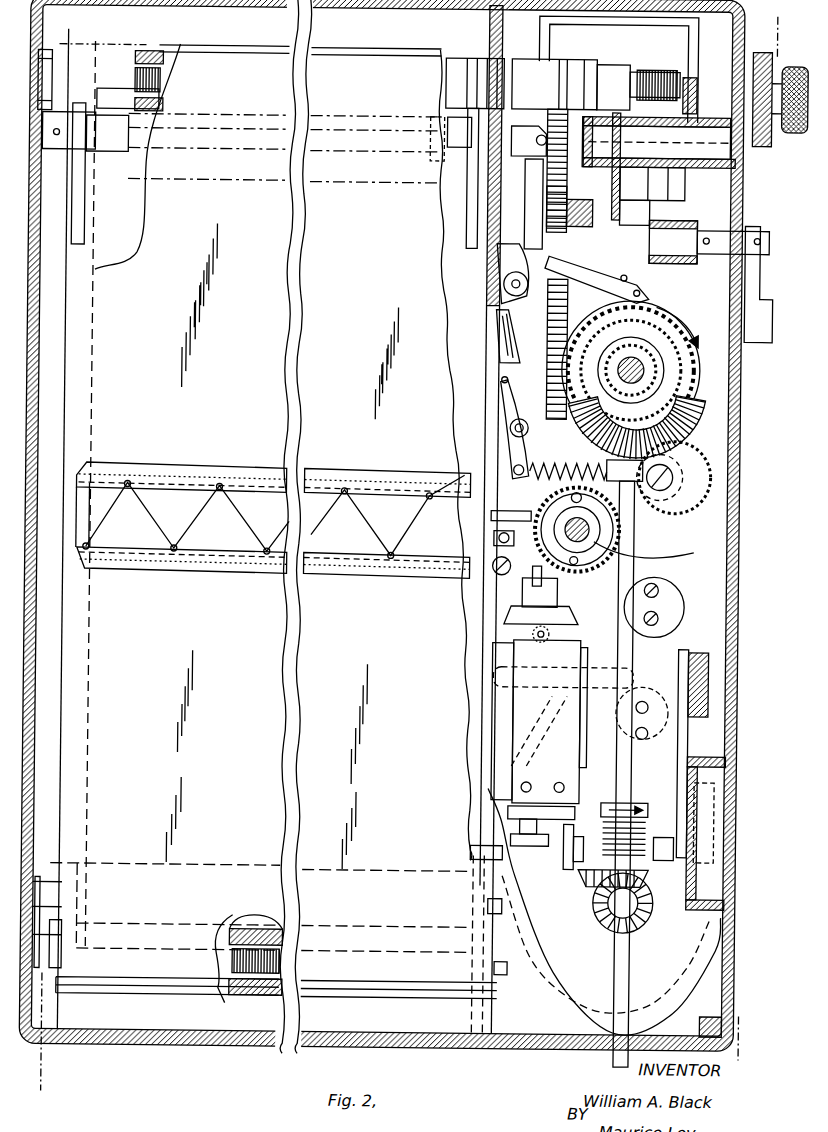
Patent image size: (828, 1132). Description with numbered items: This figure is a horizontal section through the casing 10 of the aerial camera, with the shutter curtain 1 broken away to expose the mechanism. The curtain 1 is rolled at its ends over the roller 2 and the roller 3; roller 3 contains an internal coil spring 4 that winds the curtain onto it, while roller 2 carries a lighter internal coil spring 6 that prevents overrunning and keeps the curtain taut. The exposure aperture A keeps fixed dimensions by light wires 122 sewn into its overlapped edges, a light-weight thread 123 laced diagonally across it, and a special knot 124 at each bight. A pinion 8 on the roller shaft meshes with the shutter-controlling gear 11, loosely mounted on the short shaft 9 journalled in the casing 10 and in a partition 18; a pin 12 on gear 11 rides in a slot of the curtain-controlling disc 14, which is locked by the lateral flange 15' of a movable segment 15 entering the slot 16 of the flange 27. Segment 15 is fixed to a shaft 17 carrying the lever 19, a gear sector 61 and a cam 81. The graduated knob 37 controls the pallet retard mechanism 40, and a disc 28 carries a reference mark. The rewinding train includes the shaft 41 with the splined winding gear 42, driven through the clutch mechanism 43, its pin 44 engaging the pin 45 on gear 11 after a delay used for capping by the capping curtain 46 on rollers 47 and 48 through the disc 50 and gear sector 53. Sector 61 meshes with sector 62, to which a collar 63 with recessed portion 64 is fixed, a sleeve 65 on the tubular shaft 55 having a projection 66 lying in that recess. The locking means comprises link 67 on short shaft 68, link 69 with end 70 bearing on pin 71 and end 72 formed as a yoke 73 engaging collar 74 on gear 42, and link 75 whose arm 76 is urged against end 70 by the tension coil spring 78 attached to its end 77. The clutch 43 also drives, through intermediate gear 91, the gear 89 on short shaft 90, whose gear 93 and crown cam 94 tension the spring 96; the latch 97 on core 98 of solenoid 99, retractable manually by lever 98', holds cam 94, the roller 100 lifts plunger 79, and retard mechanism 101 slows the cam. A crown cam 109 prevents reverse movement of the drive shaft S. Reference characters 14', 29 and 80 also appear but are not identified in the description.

The shutter curtain 1 is at (69, 321).
The roller 2 is at (153, 44).
The roller 3 is at (57, 978).
The internal coil spring 4 is at (782, 30).
The internal coil spring 6 is at (137, 70).
The pinion 8 is at (700, 20).
The short shaft 9 is at (665, 130).
The casing 10 is at (749, 388).
The shutter-controlling gear 11 is at (603, 58).
The pin 12 is at (622, 215).
The curtain-controlling disc 14 is at (715, 198).
The clutch member 14' is at (709, 213).
The movable segment 15 is at (714, 222).
The lateral flange 15' is at (712, 180).
The slot 16 is at (630, 168).
The shaft 17 is at (728, 240).
The partition 18 is at (499, 265).
The lever 19 is at (776, 300).
The flange 27 is at (636, 220).
The disc 28 is at (748, 181).
The bracket 29 is at (745, 164).
The knob 37 is at (759, 48).
The pallet retard mechanism 40 is at (656, 58).
The shaft 41 is at (337, 135).
The winding gear 42 is at (565, 55).
The clutch mechanism 43 is at (712, 415).
The pin 44 is at (568, 228).
The pin 45 is at (590, 228).
The capping curtain 46 is at (98, 249).
The roller 47 is at (98, 180).
The roller 48 is at (70, 868).
The disc 50 is at (80, 48).
The gear sector 53 is at (82, 237).
The tubular shaft 55 is at (360, 148).
The gear sector 61 is at (455, 208).
The gear sector 62 is at (445, 178).
The collar 63 is at (475, 83).
The recessed portion 64 is at (442, 134).
The sleeve 65 is at (443, 117).
The projection 66 is at (446, 130).
The link 67 is at (630, 272).
The short shaft 68 is at (507, 279).
The link 69 is at (478, 238).
The end 70 is at (500, 354).
The pin 71 is at (506, 374).
The end 72 is at (512, 184).
The yoke 73 is at (512, 53).
The collar 74 is at (538, 118).
The link 75 is at (515, 425).
The arm 76 is at (525, 398).
The end 77 is at (519, 462).
The tension coil spring 78 is at (575, 456).
The plunger 79 is at (500, 533).
The arm 80 is at (500, 510).
The cam 81 is at (540, 202).
The gear 89 is at (628, 556).
The short shaft 90 is at (620, 527).
The intermediate gear 91 is at (716, 466).
The gear 93 is at (628, 540).
The crown cam 94 is at (535, 504).
The spring 96 is at (660, 538).
The latch 97 is at (540, 563).
The core 98 is at (498, 624).
The lever 98' is at (725, 757).
The solenoid 99 is at (531, 745).
The roller 100 is at (505, 553).
The retard mechanism 101 is at (650, 658).
The crown cam 109 is at (688, 389).
The light wires 122 is at (408, 483).
The light-weight thread 123 is at (372, 513).
The special knot 124 is at (350, 484).
The exposure aperture A is at (257, 506).
The rotatable shaft S is at (640, 945).